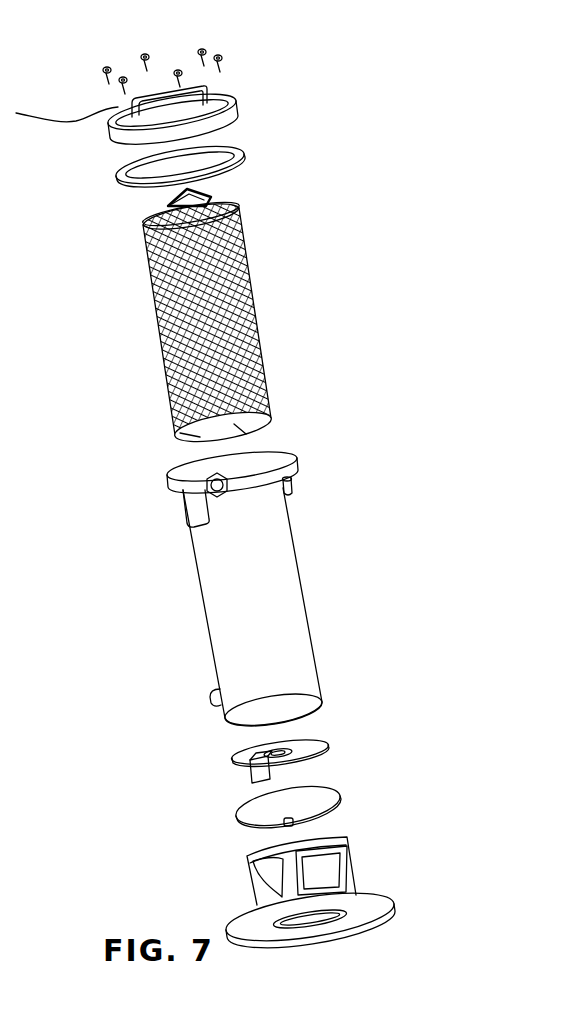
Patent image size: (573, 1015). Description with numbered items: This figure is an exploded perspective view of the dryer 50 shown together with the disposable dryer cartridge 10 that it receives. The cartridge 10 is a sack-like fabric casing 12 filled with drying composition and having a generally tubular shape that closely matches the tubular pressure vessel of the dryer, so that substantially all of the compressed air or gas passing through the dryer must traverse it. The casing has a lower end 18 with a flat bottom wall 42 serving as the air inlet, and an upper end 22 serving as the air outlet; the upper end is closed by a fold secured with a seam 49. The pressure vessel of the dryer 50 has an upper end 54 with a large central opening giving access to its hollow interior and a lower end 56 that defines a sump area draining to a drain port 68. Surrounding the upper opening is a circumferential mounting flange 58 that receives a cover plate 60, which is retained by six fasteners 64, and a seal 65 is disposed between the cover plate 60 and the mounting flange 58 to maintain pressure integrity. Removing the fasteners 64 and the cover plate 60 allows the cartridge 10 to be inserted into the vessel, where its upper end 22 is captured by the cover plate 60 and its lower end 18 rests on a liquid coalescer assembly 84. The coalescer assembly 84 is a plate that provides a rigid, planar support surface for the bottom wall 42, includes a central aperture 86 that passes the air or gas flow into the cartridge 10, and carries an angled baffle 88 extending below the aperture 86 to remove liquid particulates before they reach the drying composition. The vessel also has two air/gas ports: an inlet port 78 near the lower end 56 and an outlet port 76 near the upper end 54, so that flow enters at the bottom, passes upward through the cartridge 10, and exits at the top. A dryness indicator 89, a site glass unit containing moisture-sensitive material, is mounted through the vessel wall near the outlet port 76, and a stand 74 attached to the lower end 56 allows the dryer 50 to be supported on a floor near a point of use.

The disposable dryer cartridge 10 is at (293, 303).
The fabric casing 12 is at (148, 288).
The lower end 18 is at (176, 437).
The upper end 22 is at (236, 212).
The bottom wall 42 is at (234, 426).
The seam 49 is at (176, 201).
The dryer 50 is at (185, 599).
The upper end 54 is at (160, 478).
The lower end 56 is at (170, 736).
The mounting flange 58 is at (300, 461).
The cover plate 60 is at (240, 112).
The fasteners 64 is at (214, 60).
The seal 65 is at (246, 157).
The drain port 68 is at (300, 828).
The stand 74 is at (273, 849).
The outlet port 76 is at (295, 485).
The inlet port 78 is at (213, 696).
The liquid coalescer assembly 84 is at (330, 745).
The central aperture 86 is at (291, 763).
The angled baffle 88 is at (245, 776).
The dryness indicator 89 is at (196, 524).